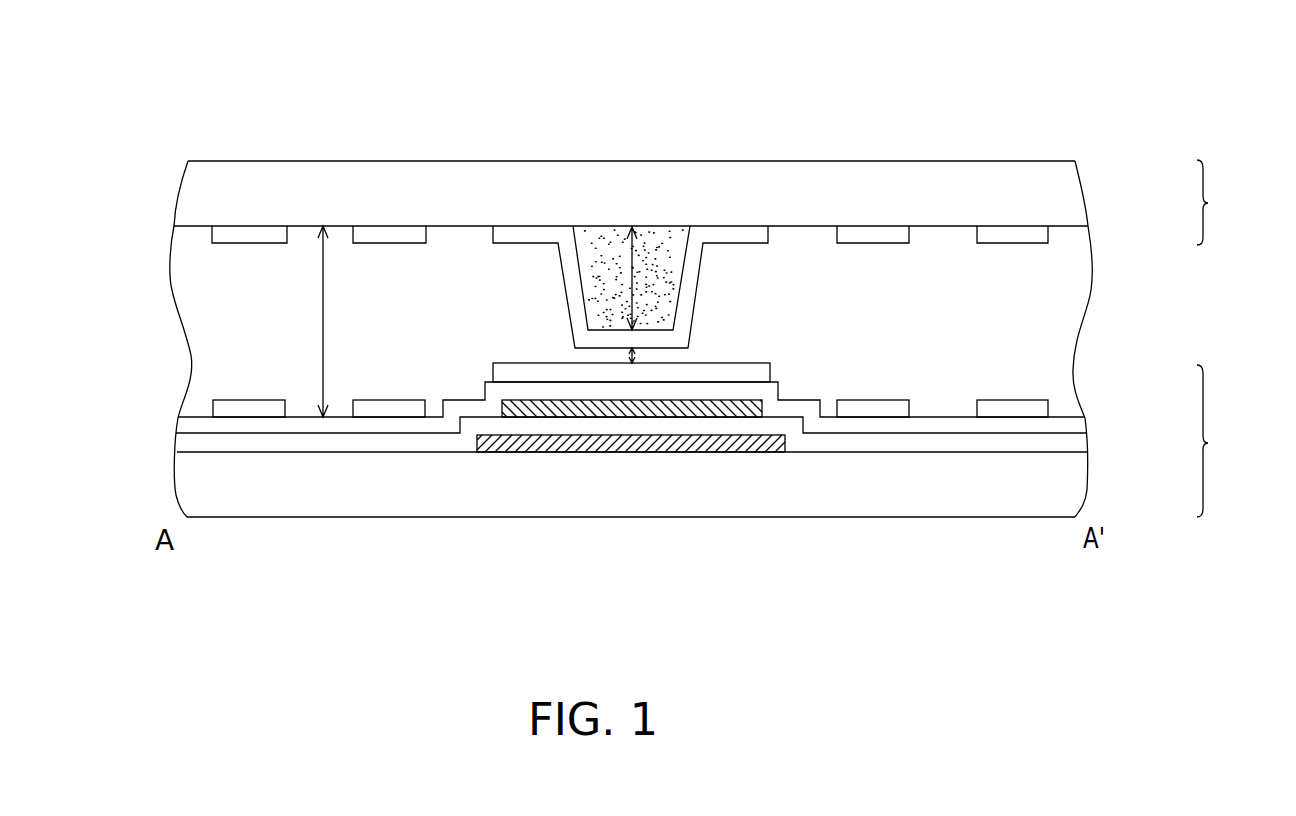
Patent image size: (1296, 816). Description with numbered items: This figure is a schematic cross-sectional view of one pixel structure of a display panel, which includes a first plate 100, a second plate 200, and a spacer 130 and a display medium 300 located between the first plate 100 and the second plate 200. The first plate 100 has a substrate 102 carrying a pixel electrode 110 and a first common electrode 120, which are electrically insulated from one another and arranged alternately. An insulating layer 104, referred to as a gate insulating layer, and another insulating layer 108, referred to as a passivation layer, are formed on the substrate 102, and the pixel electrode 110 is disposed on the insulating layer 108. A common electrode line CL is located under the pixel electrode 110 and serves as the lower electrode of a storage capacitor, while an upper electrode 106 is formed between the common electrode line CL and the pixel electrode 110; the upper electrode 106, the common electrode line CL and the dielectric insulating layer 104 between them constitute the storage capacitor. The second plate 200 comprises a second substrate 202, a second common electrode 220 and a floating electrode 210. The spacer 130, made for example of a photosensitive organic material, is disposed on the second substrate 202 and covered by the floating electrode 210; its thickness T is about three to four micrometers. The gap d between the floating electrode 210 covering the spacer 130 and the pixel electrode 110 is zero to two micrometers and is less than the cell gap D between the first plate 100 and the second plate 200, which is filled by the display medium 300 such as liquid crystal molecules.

The first plate 100 is at (1223, 441).
The substrate 102 is at (1053, 485).
The insulating layer 104 is at (1063, 443).
The upper electrode 106 is at (540, 407).
The insulating layer 108 is at (1063, 427).
The pixel electrode 110 is at (233, 408).
The first common electrode 120 is at (388, 408).
The spacer 130 is at (662, 248).
The second plate 200 is at (1223, 202).
The second substrate 202 is at (1043, 192).
The floating electrode 210 is at (255, 235).
The second common electrode 220 is at (395, 235).
The display medium 300 is at (1027, 328).
The thickness of the spacer T is at (630, 265).
The cell gap D is at (323, 350).
The gap d is at (635, 355).
The common electrode line CL is at (603, 440).